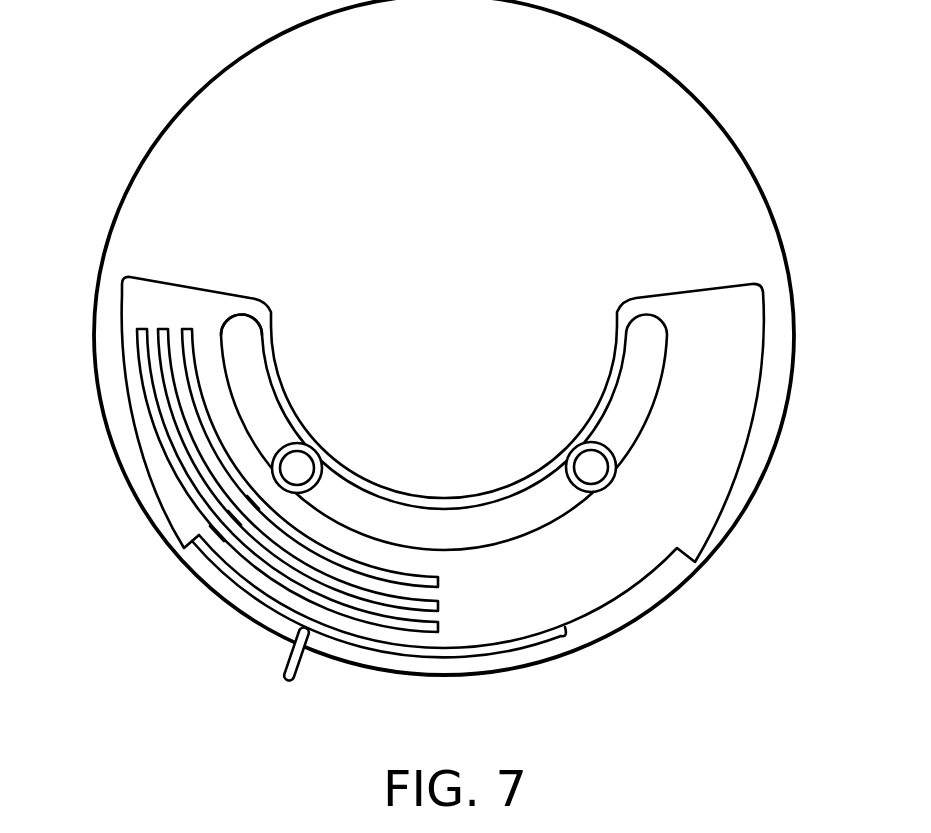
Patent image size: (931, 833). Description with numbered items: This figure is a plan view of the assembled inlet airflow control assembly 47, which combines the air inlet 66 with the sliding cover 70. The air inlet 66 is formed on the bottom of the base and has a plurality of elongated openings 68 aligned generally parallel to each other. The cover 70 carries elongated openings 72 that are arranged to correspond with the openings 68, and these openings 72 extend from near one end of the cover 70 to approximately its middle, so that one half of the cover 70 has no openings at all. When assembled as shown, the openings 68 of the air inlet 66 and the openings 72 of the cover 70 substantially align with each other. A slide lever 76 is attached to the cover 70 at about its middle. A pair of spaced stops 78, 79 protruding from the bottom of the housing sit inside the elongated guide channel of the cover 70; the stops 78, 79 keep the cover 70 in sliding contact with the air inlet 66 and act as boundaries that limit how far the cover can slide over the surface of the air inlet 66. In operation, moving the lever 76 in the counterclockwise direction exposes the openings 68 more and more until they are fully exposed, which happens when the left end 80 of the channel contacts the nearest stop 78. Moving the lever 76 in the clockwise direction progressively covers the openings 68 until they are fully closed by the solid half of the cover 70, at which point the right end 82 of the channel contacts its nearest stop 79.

The inlet airflow control assembly 47 is at (736, 616).
The air inlet 66 is at (247, 606).
The elongated openings 68 is at (240, 522).
The cover 70 is at (638, 298).
The elongated openings 72 is at (156, 436).
The slide lever 76 is at (287, 672).
The stop 78 is at (299, 443).
The stop 79 is at (588, 442).
The left end of the channel 80 is at (244, 312).
The right end of the channel 82 is at (618, 323).